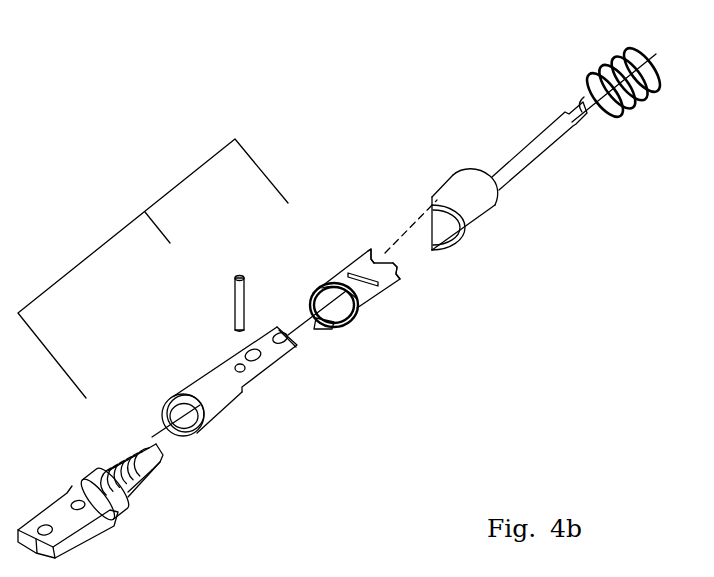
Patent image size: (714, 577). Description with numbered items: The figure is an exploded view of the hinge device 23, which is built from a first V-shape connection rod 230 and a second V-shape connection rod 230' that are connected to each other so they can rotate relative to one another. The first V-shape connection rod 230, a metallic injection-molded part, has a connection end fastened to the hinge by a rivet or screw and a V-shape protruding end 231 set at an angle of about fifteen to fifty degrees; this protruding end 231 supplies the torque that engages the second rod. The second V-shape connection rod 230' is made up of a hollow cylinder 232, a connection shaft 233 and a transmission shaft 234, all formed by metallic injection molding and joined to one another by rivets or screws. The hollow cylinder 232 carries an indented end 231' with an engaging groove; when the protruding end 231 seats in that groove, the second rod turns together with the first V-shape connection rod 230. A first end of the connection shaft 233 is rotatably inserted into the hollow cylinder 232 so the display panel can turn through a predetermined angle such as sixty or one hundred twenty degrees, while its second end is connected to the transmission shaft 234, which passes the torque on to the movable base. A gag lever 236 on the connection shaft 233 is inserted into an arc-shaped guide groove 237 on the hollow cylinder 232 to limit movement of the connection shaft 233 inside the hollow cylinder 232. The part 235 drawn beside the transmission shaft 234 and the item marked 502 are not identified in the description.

The hinge device 23 is at (200, 88).
The first V-shape connection rod 230 is at (535, 146).
The second V-shape connection rod 230' is at (153, 268).
The V-shape protruding end 231 is at (405, 222).
The indented end 231' is at (373, 224).
The hollow cylinder 232 is at (333, 272).
The connection shaft 233 is at (229, 392).
The transmission shaft 234 is at (83, 490).
The threaded portion 235 is at (122, 460).
The gag lever 236 is at (235, 306).
The arc-shaped guide groove 237 is at (369, 306).
The hole 502 is at (466, 289).